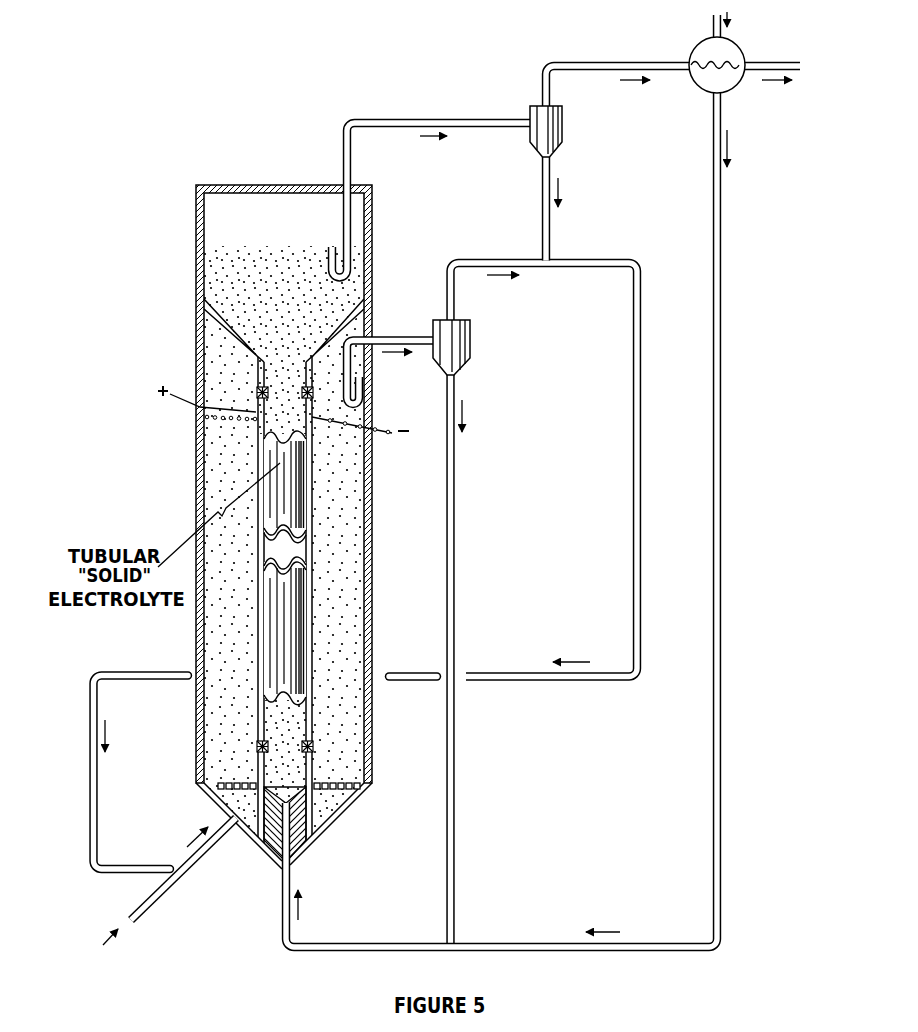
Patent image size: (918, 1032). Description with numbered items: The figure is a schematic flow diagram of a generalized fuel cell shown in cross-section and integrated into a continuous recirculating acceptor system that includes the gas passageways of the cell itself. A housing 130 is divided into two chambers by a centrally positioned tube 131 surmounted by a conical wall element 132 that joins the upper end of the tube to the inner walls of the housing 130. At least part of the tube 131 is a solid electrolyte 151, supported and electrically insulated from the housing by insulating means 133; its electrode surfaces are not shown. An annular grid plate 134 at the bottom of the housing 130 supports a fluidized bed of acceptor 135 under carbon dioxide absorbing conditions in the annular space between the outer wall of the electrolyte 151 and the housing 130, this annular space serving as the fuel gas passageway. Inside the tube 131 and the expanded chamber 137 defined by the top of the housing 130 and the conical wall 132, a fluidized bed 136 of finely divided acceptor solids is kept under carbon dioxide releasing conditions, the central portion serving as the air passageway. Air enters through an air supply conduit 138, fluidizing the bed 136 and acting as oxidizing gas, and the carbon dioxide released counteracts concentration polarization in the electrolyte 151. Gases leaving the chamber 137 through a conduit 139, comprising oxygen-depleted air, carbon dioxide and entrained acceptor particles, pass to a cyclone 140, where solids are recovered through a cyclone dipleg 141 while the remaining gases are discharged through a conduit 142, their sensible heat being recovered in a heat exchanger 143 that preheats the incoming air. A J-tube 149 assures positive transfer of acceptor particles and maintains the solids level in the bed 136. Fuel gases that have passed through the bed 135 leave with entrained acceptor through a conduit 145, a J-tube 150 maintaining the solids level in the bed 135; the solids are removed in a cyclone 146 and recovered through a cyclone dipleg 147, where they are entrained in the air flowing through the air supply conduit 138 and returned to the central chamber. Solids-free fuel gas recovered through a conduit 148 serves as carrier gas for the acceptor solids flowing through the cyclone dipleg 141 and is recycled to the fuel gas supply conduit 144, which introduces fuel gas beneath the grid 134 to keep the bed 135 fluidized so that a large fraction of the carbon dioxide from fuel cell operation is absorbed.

The housing 130 is at (197, 470).
The tube 131 is at (260, 624).
The conical wall element 132 is at (323, 344).
The insulating means 133 is at (258, 388).
The annular grid plate 134 is at (352, 786).
The fluidized bed of acceptor 135 is at (250, 571).
The fluidized bed 136 is at (296, 306).
The expanded chamber 137 is at (292, 232).
The air supply conduit 138 is at (722, 200).
The conduit 139 is at (448, 120).
The cyclone 140 is at (556, 148).
The cyclone dipleg 141 is at (543, 190).
The conduit 142 is at (566, 70).
The heat exchanger 143 is at (730, 46).
The fuel gas supply conduit 144 is at (152, 892).
The conduit 145 is at (430, 340).
The cyclone 146 is at (470, 336).
The cyclone dipleg 147 is at (462, 484).
The conduit 148 is at (502, 262).
The J-tube 149 is at (352, 261).
The J-tube 150 is at (363, 393).
The solid electrolyte 151 is at (312, 612).